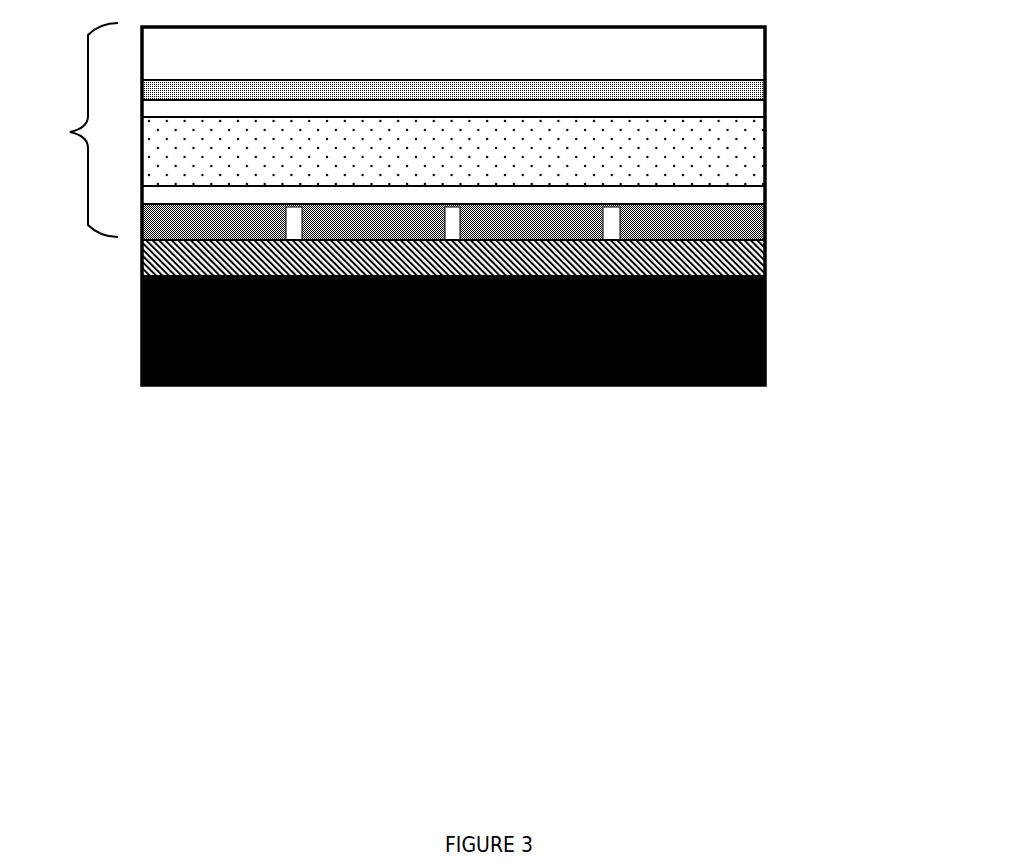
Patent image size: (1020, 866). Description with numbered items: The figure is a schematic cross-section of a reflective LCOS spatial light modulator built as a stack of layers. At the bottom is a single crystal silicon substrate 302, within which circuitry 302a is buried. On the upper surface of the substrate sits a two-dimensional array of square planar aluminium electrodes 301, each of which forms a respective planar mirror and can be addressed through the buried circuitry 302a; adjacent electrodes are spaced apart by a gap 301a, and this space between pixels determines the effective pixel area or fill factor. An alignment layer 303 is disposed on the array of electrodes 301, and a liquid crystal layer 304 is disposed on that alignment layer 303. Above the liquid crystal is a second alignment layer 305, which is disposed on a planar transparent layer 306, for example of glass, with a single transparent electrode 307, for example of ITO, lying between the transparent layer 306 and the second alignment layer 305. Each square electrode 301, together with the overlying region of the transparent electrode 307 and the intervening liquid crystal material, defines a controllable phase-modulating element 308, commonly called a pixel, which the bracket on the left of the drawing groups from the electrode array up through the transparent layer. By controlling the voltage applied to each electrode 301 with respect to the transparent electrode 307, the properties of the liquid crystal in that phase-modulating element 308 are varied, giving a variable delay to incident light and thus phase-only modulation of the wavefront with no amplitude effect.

The square planar aluminium electrodes 301 is at (765, 223).
The gap 301a is at (606, 253).
The single crystal silicon substrate 302 is at (137, 348).
The circuitry 302a is at (138, 260).
The alignment layer 303 is at (742, 195).
The liquid crystal layer 304 is at (743, 155).
The second alignment layer 305 is at (743, 108).
The planar transparent layer 306 is at (743, 53).
The transparent electrode 307 is at (743, 90).
The phase-modulating element 308 is at (448, 130).